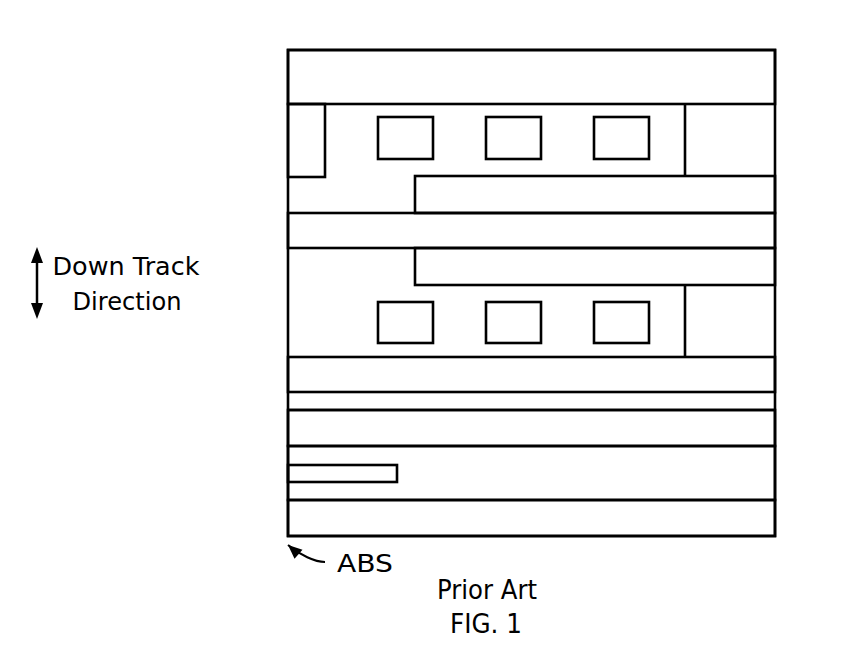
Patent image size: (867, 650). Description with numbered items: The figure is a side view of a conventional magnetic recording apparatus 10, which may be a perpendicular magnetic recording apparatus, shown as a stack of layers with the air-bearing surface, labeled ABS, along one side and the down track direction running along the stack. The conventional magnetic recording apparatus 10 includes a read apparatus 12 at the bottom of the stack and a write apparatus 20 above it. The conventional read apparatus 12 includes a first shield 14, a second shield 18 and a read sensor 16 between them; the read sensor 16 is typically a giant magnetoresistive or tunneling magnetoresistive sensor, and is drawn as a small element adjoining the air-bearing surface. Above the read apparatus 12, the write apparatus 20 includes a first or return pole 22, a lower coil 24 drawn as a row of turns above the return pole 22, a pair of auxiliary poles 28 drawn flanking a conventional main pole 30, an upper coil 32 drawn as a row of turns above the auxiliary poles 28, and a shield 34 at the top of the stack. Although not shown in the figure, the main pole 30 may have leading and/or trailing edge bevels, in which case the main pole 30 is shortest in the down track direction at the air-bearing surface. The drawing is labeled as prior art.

The magnetic recording apparatus 10 is at (472, 26).
The read apparatus 12 is at (268, 438).
The shield 14 is at (775, 521).
The read sensor 16 is at (288, 475).
The shield 18 is at (775, 428).
The write apparatus 20 is at (268, 165).
The return pole 22 is at (288, 373).
The coil 24 is at (343, 337).
The auxiliary poles 28 is at (775, 190).
The main pole 30 is at (288, 232).
The coil 32 is at (352, 130).
The shield 34 is at (775, 63).